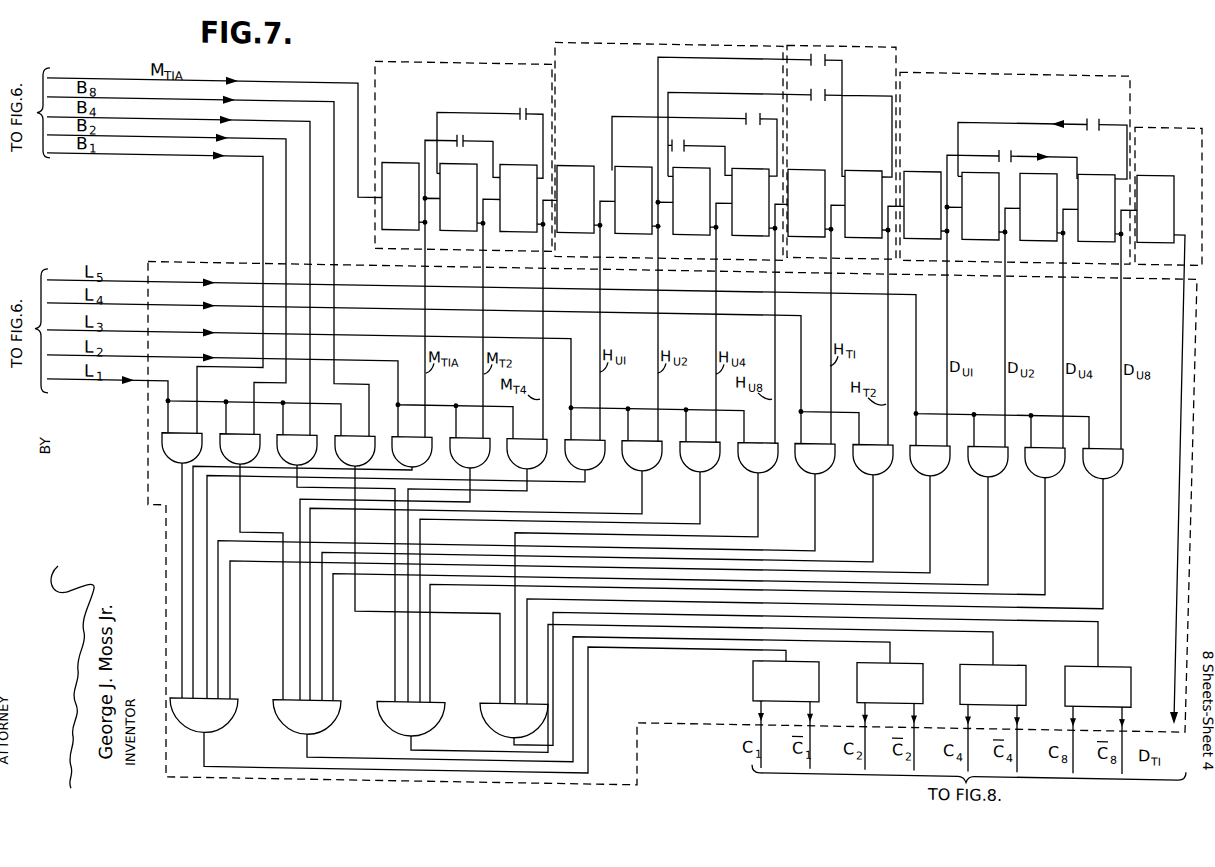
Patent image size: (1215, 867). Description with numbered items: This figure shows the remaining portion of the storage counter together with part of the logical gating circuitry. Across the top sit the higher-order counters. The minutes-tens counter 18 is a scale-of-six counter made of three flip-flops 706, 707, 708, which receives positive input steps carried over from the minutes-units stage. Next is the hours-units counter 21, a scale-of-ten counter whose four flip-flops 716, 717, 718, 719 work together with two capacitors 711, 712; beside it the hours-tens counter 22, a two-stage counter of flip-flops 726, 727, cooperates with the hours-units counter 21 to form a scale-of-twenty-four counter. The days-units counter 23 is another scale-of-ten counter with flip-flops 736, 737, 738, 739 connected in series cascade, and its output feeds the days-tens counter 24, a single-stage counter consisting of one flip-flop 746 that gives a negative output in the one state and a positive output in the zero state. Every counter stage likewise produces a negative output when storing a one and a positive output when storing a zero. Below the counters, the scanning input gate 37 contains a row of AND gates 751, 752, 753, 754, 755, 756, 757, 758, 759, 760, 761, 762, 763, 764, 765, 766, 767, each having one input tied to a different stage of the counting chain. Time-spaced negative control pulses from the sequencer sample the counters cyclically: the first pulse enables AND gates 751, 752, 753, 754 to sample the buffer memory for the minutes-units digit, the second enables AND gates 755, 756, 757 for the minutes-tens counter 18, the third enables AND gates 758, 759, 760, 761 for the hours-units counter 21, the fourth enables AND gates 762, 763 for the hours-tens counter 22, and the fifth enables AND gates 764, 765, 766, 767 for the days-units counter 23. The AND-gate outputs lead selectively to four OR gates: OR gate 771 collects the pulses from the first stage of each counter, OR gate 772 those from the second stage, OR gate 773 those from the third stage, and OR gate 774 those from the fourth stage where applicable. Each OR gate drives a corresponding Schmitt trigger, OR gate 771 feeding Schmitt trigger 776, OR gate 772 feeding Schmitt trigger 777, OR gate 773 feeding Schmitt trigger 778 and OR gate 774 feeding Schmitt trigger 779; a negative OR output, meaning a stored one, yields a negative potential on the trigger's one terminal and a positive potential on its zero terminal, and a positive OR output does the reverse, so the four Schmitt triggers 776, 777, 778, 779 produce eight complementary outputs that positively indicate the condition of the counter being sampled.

The minutes-tens counter 18 is at (430, 55).
The hours-units counter 21 is at (648, 35).
The hours-tens counter 22 is at (847, 35).
The days-units counter 23 is at (1026, 56).
The days-tens counter 24 is at (1153, 99).
The scanning input gate 37 is at (178, 256).
The flip-flop 706 is at (400, 156).
The flip-flop 707 is at (471, 228).
The flip-flop 708 is at (531, 228).
The capacitor 711 is at (681, 134).
The capacitor 712 is at (747, 110).
The flip-flop 716 is at (590, 228).
The flip-flop 717 is at (646, 228).
The flip-flop 718 is at (702, 228).
The flip-flop 719 is at (761, 228).
The flip-flop 726 is at (823, 228).
The flip-flop 727 is at (873, 228).
The flip-flop 736 is at (938, 228).
The flip-flop 737 is at (992, 228).
The flip-flop 738 is at (1050, 228).
The flip-flop 739 is at (1108, 228).
The flip-flop 746 is at (1172, 228).
The AND gate 751 is at (172, 459).
The AND gate 752 is at (227, 454).
The AND gate 753 is at (284, 454).
The AND gate 754 is at (342, 454).
The AND gate 755 is at (424, 456).
The AND gate 756 is at (482, 456).
The AND gate 757 is at (539, 456).
The AND gate 758 is at (597, 456).
The AND gate 759 is at (654, 456).
The AND gate 760 is at (712, 456).
The AND gate 761 is at (770, 456).
The AND gate 762 is at (827, 456).
The AND gate 763 is at (885, 456).
The AND gate 764 is at (942, 456).
The AND gate 765 is at (1000, 456).
The AND gate 766 is at (1057, 456).
The AND gate 767 is at (1115, 456).
The OR gate 771 is at (254, 696).
The OR gate 772 is at (360, 697).
The OR gate 773 is at (460, 698).
The OR gate 774 is at (482, 722).
The Schmitt trigger 776 is at (749, 656).
The Schmitt trigger 777 is at (857, 655).
The Schmitt trigger 778 is at (960, 653).
The Schmitt trigger 779 is at (1065, 651).